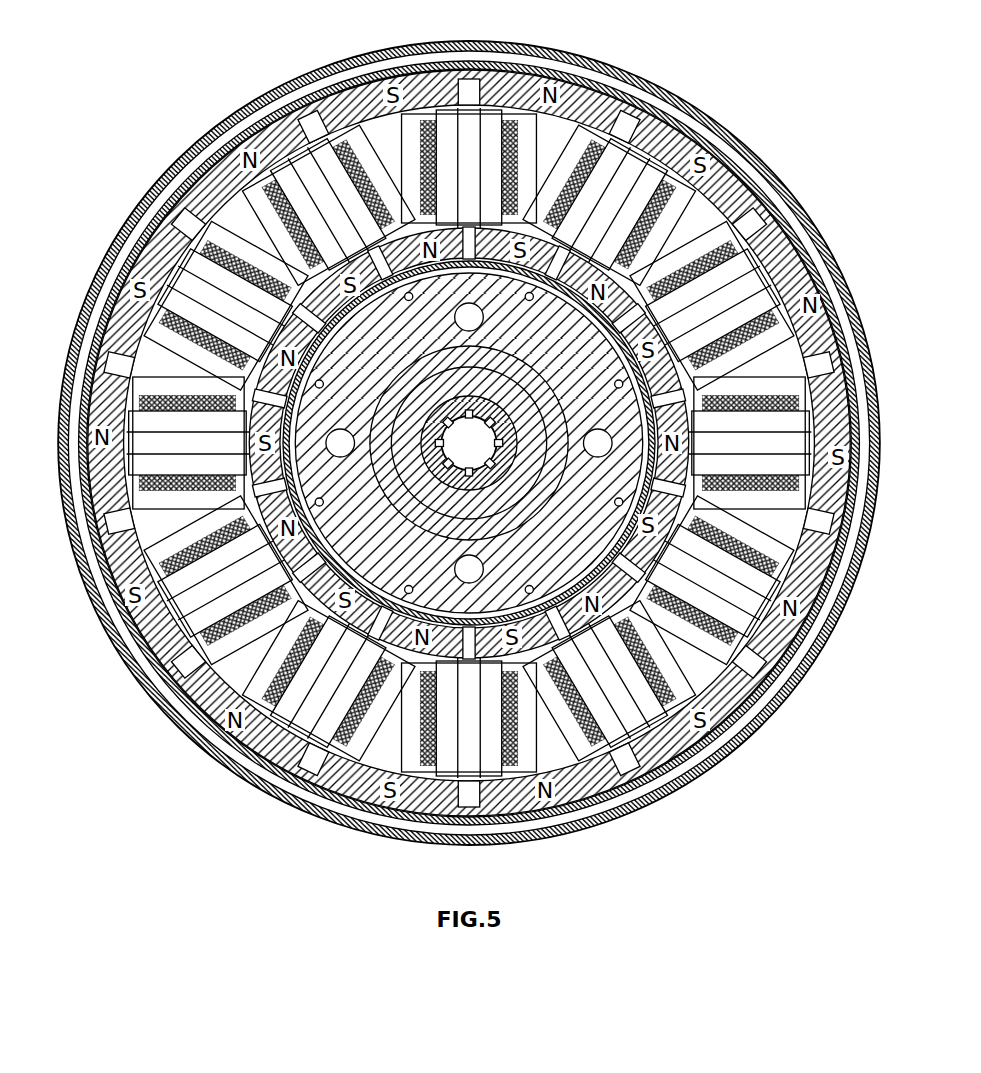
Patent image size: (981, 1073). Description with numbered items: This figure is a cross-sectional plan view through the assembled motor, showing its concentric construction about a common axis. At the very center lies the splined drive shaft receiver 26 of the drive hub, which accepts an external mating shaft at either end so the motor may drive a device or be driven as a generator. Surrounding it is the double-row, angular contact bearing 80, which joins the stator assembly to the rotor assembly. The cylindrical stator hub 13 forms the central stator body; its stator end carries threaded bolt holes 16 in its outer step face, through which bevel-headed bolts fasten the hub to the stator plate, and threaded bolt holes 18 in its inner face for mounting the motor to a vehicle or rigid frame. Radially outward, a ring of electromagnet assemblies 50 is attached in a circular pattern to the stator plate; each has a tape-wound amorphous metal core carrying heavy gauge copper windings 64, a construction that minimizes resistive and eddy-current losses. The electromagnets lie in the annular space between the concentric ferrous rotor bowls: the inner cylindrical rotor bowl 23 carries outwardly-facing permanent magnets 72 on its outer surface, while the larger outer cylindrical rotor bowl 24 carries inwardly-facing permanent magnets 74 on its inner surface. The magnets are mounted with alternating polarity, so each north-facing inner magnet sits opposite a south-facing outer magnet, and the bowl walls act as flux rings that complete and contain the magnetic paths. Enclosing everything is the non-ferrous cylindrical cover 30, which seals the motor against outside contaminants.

The stator hub 13 is at (572, 558).
The bolt holes 16 is at (409, 304).
The threaded bolt holes 18 is at (484, 320).
The inner cylindrical rotor bowl 23 is at (185, 632).
The outer cylindrical rotor bowl 24 is at (105, 580).
The splined drive shaft receiver 26 is at (497, 436).
The cover 30 is at (130, 222).
The electromagnet assemblies 50 is at (280, 127).
The copper windings 64 is at (350, 137).
The outwardly-facing permanent magnets 72 is at (658, 185).
The inwardly-facing permanent magnets 74 is at (165, 255).
The bearing 80 is at (547, 480).